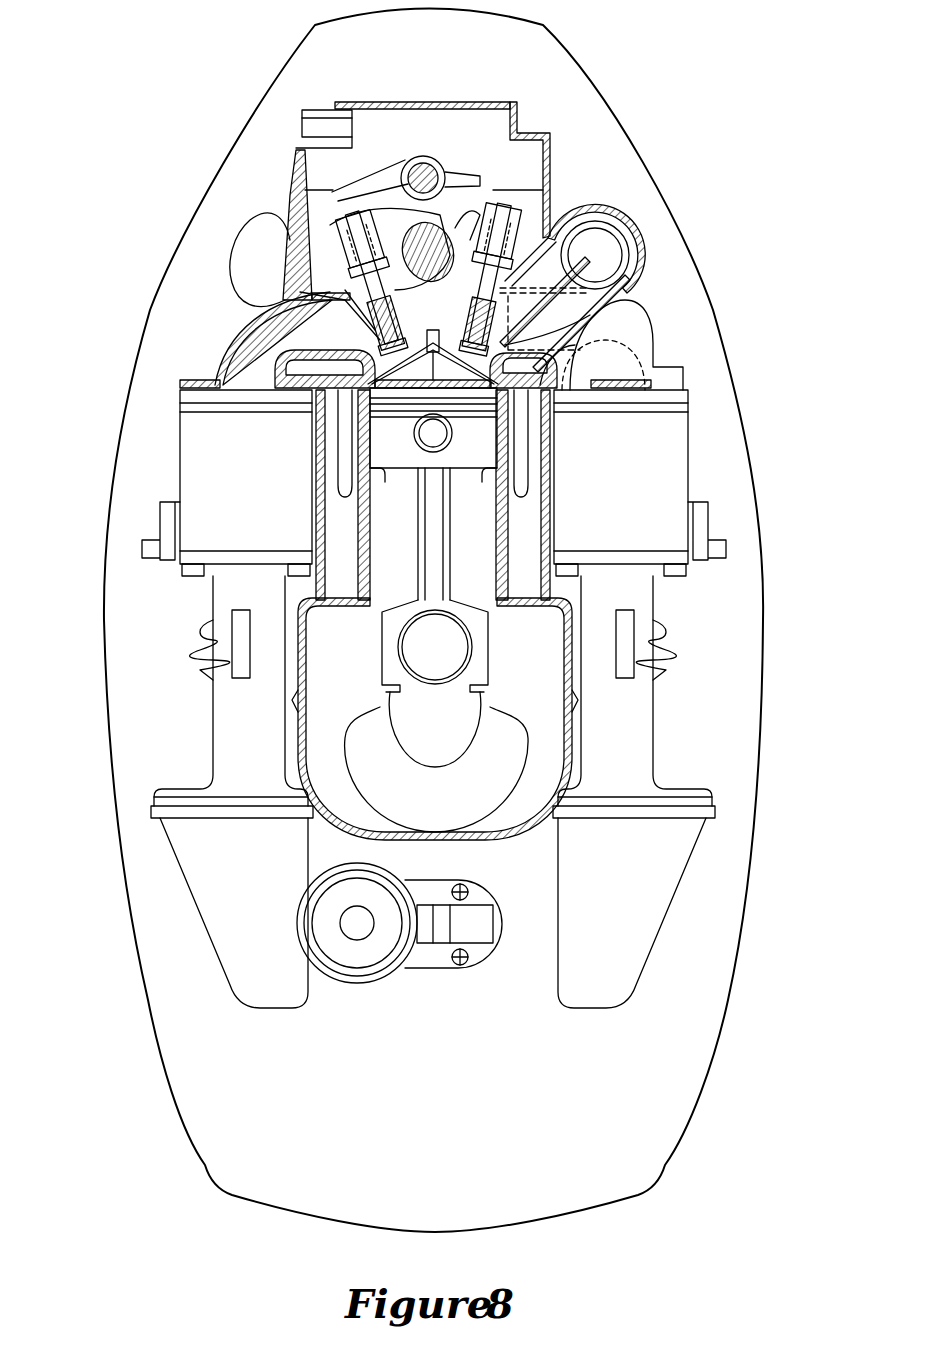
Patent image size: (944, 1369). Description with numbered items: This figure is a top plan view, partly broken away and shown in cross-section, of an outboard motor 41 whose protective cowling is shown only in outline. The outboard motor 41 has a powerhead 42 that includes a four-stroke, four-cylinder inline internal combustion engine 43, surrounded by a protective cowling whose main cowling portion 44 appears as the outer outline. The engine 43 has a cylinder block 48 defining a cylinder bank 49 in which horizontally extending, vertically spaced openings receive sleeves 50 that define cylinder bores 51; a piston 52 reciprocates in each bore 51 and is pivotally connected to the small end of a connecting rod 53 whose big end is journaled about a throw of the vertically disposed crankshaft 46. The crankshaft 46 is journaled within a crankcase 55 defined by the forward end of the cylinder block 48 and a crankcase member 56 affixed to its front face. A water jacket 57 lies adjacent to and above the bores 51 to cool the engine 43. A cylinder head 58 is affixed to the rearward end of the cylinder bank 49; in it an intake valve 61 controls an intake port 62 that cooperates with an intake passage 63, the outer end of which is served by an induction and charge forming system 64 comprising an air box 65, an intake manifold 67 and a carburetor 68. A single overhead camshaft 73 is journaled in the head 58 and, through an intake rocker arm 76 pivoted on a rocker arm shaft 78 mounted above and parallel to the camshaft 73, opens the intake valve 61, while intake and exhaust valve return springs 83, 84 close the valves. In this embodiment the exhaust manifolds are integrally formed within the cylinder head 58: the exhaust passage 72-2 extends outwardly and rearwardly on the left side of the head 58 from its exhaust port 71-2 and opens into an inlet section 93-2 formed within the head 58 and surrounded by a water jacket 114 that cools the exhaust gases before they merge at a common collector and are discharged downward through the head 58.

The outboard motor 41 is at (702, 40).
The powerhead 42 is at (162, 132).
The internal combustion engine 43 is at (176, 307).
The main cowling portion 44 is at (658, 187).
The crankshaft 46 is at (467, 715).
The cylinder block 48 is at (314, 505).
The cylinder bank 49 is at (356, 556).
The sleeve 50 is at (494, 540).
The cylinder bore 51 is at (387, 586).
The piston 52 is at (407, 453).
The connecting rod 53 is at (450, 533).
The crankcase 55 is at (344, 806).
The crankcase member 56 is at (530, 845).
The water jacket 57 is at (533, 500).
The cylinder head 58 is at (290, 232).
The intake valve 61 is at (403, 372).
The intake port 62 is at (393, 380).
The intake passage 63 is at (215, 366).
The induction and charge forming system 64 is at (463, 368).
The air box 65 is at (200, 913).
The intake manifold 67 is at (213, 748).
The carburetor 68 is at (182, 467).
The number two cylinder exhaust port 71-2 is at (598, 335).
The exhaust passage 72-2 is at (633, 283).
The camshaft 73 is at (412, 236).
The intake rocker arm 76 is at (389, 186).
The rocker arm shaft 78 is at (428, 155).
The intake valve return spring 83 is at (330, 248).
The exhaust valve return spring 84 is at (597, 260).
The inlet section 93-2 is at (570, 263).
The water jacket 114 is at (605, 220).